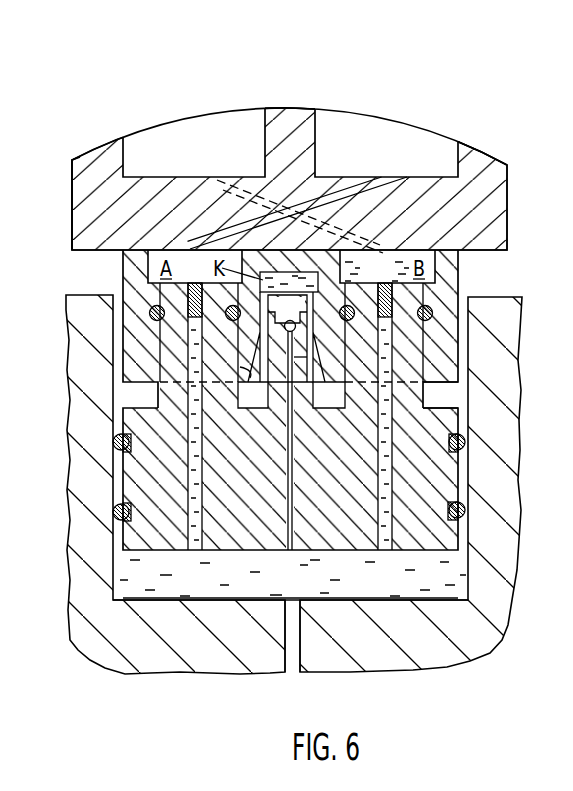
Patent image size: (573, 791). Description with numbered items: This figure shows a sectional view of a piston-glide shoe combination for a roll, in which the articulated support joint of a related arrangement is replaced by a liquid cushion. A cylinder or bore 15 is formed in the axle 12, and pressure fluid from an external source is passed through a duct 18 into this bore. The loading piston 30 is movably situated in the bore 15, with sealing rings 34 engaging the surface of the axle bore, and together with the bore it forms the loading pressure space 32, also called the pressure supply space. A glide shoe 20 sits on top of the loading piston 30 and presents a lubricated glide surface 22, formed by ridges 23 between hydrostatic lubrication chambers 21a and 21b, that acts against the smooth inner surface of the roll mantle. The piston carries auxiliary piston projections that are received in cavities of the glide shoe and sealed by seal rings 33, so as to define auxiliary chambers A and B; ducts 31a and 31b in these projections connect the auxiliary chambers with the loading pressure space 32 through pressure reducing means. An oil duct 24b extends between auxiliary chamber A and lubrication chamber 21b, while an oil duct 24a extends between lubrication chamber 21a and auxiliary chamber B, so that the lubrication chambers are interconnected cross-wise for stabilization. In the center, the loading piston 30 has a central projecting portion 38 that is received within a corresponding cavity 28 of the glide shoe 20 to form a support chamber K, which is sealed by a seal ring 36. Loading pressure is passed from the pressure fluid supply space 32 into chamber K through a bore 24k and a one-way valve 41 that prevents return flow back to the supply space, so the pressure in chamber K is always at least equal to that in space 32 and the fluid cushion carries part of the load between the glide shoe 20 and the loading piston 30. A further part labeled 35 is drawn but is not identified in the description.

The axle 12 is at (82, 609).
The cylinder or bore 15 is at (462, 582).
The duct 18 is at (290, 673).
The glide shoe 20 is at (500, 194).
The hydrostatic lubrication chamber 21a is at (172, 137).
The hydrostatic lubrication chamber 21b is at (398, 137).
The lubricated glide surface 22 is at (88, 150).
The ridge 23 is at (283, 107).
The oil duct 24a is at (237, 176).
The oil duct 24b is at (352, 192).
The bore 24k is at (292, 550).
The cavity 28 is at (240, 367).
The loading piston 30 is at (243, 525).
The duct 31a is at (193, 543).
The duct 31b is at (387, 533).
The loading pressure space 32 is at (440, 595).
The seal ring 33 is at (432, 310).
The sealing ring 34 is at (113, 512).
The groove 35 is at (430, 423).
The seal ring 36 is at (315, 317).
The central projecting portion 38 is at (295, 325).
The one-way valve 41 is at (307, 357).